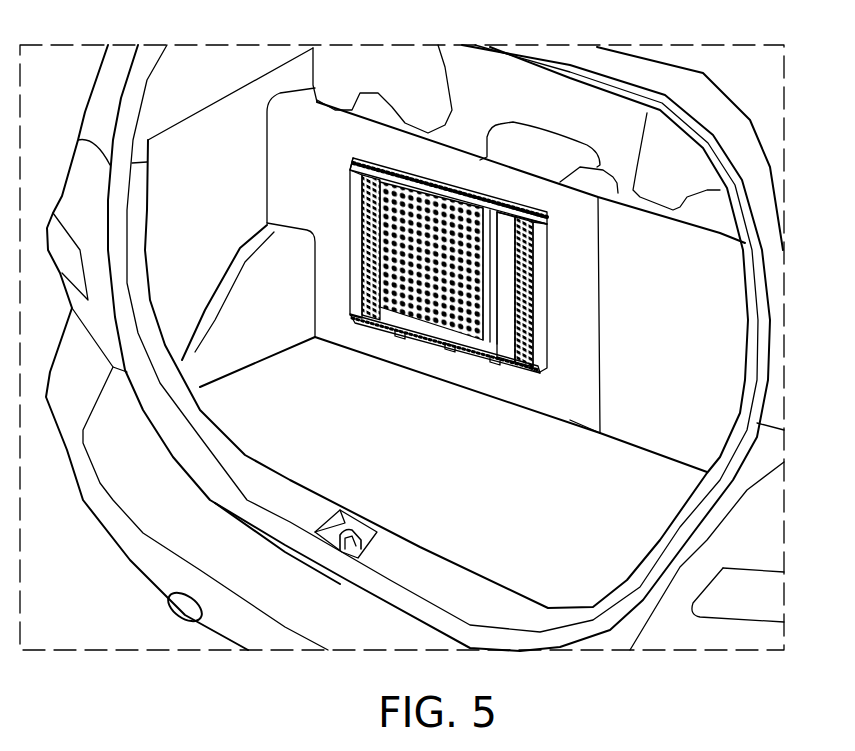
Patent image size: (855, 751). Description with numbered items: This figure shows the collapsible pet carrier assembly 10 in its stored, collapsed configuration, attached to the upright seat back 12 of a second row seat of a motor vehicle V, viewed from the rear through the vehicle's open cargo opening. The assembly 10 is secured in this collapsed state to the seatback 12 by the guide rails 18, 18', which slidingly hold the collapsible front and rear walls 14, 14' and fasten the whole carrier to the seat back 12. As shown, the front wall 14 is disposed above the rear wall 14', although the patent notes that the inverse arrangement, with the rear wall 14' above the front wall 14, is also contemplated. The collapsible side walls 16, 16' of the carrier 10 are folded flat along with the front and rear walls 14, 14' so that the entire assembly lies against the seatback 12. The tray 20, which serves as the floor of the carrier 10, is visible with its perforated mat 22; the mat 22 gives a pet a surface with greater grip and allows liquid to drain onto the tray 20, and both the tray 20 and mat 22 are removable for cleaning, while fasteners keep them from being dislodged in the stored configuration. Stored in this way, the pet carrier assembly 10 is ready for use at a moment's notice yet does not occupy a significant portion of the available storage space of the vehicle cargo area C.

The vehicle V is at (84, 132).
The vehicle cargo area C is at (446, 472).
The collapsible pet carrier assembly 10 is at (339, 185).
The vehicle seat back 12 is at (545, 393).
The front wall 14 is at (448, 159).
The rear wall 14' is at (445, 362).
The side wall 16 is at (332, 245).
The side wall 16' is at (570, 292).
The front guide rail 18 is at (571, 222).
The rear guide rail 18' is at (583, 368).
The tray 20 is at (488, 268).
The perforated mat 22 is at (395, 303).